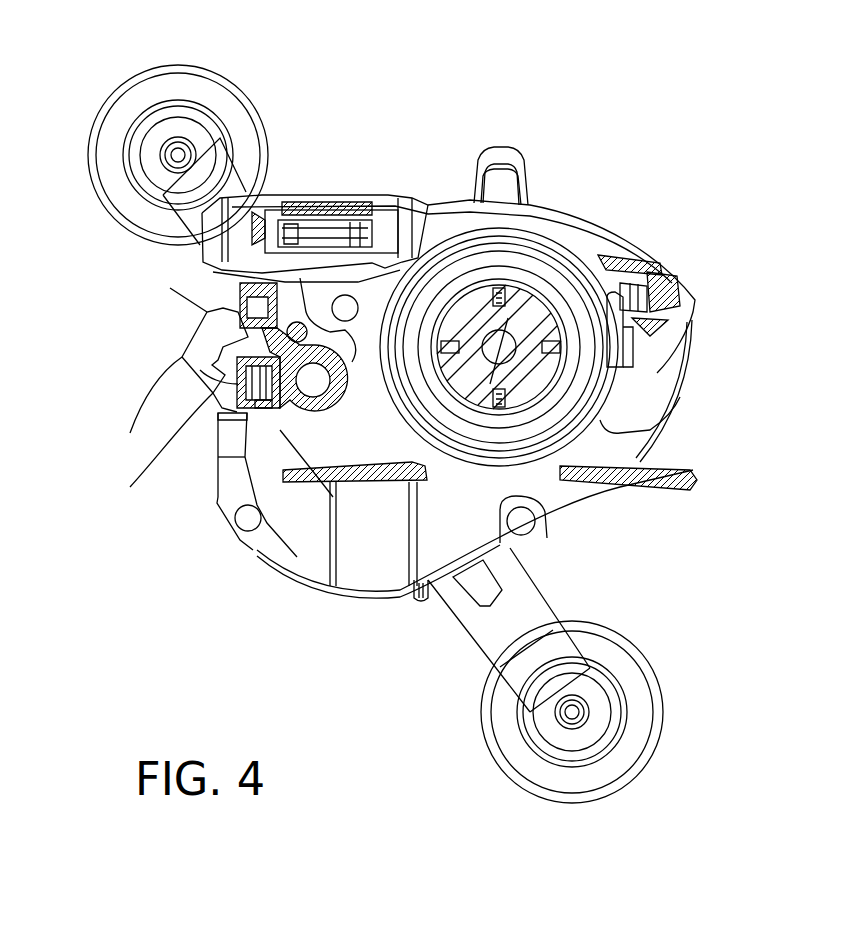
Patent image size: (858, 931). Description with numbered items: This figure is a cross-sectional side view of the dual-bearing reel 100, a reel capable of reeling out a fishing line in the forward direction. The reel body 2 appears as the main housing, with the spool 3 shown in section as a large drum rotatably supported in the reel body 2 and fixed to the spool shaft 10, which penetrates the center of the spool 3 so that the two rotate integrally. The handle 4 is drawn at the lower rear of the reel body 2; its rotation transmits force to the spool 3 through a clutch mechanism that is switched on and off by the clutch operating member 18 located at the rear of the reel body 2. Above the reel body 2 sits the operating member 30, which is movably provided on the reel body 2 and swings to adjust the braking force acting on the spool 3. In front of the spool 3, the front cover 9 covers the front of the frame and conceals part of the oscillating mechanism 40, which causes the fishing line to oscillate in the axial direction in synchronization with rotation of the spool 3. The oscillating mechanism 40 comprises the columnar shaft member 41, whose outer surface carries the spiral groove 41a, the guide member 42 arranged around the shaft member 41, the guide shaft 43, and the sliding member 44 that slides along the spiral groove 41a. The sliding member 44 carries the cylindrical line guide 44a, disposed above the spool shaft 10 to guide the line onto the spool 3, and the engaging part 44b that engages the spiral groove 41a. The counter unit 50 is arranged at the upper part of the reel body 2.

The dual-bearing reel 100 is at (728, 140).
The reel body 2 is at (565, 230).
The spool 3 is at (577, 393).
The handle 4 is at (612, 672).
The front cover 9 is at (197, 373).
The spool shaft 10 is at (497, 345).
The clutch operating member 18 is at (672, 310).
The operating member 30 is at (500, 135).
The oscillating mechanism 40 is at (242, 337).
The shaft member 41 is at (283, 415).
The spiral groove 41a is at (240, 383).
The guide member 42 is at (318, 413).
The guide shaft 43 is at (296, 222).
The sliding member 44 is at (272, 400).
The line guide 44a is at (240, 295).
The engaging part 44b is at (280, 415).
The counter unit 50 is at (348, 195).